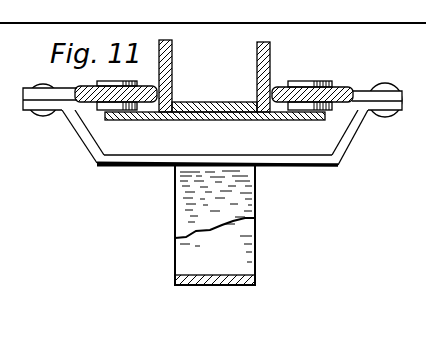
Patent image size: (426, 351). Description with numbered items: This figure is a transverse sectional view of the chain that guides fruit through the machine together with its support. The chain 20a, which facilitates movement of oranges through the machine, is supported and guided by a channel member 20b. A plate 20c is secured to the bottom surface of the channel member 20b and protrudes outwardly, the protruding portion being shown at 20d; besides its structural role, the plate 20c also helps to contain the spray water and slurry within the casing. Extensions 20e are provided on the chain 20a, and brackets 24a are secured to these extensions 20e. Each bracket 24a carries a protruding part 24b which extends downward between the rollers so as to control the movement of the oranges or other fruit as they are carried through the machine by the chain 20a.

The chain 20a is at (90, 100).
The channel member 20b is at (271, 57).
The plate 20c is at (185, 121).
The protruding portion of plate 20d is at (332, 122).
The extensions 20e is at (358, 90).
The brackets 24a is at (322, 170).
The protruding part 24b is at (255, 265).